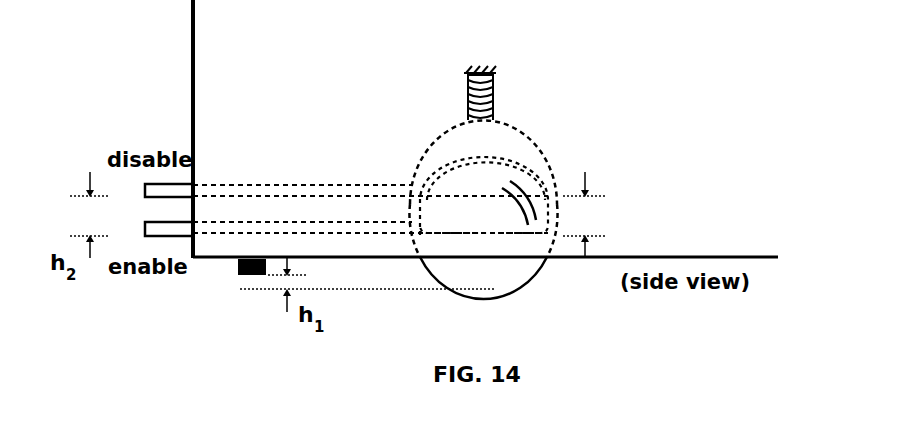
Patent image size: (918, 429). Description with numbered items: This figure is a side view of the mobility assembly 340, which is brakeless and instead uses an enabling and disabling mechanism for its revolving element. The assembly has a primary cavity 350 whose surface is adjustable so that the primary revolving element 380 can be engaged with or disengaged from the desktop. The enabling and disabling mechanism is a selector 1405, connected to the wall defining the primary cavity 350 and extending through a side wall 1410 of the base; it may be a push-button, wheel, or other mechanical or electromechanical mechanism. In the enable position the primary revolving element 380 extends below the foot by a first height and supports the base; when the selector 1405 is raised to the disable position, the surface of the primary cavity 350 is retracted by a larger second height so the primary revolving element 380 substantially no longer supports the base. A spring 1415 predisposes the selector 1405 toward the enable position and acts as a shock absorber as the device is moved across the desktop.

The side wall 1410 is at (193, 88).
The selector 1405 is at (290, 185).
The spring 1415 is at (495, 90).
The mobility assembly 340 is at (541, 180).
The primary cavity 350 is at (546, 152).
The primary revolving element 380 is at (505, 273).